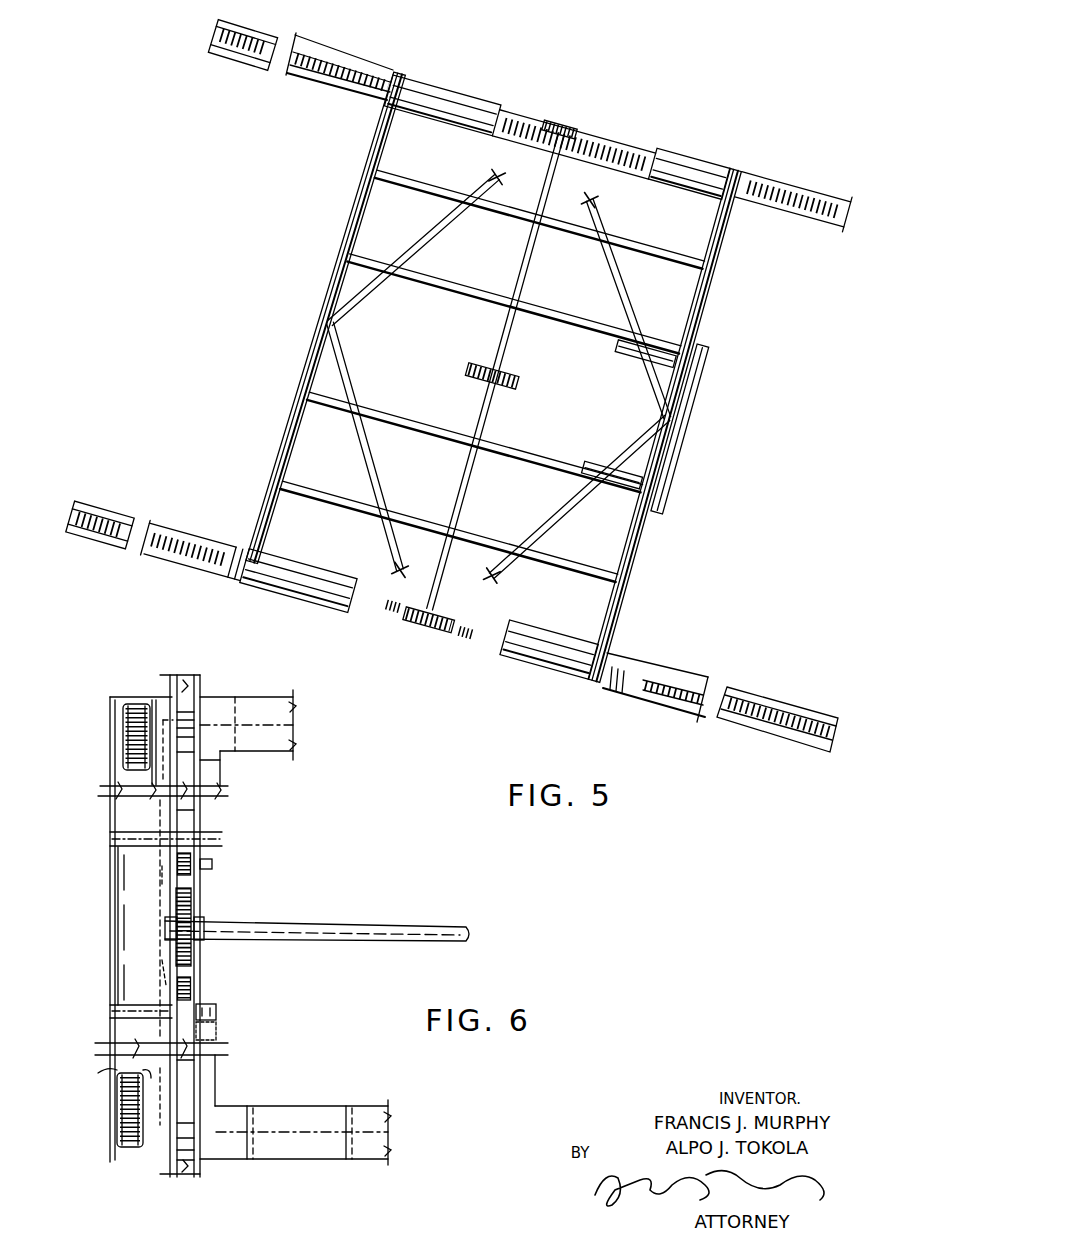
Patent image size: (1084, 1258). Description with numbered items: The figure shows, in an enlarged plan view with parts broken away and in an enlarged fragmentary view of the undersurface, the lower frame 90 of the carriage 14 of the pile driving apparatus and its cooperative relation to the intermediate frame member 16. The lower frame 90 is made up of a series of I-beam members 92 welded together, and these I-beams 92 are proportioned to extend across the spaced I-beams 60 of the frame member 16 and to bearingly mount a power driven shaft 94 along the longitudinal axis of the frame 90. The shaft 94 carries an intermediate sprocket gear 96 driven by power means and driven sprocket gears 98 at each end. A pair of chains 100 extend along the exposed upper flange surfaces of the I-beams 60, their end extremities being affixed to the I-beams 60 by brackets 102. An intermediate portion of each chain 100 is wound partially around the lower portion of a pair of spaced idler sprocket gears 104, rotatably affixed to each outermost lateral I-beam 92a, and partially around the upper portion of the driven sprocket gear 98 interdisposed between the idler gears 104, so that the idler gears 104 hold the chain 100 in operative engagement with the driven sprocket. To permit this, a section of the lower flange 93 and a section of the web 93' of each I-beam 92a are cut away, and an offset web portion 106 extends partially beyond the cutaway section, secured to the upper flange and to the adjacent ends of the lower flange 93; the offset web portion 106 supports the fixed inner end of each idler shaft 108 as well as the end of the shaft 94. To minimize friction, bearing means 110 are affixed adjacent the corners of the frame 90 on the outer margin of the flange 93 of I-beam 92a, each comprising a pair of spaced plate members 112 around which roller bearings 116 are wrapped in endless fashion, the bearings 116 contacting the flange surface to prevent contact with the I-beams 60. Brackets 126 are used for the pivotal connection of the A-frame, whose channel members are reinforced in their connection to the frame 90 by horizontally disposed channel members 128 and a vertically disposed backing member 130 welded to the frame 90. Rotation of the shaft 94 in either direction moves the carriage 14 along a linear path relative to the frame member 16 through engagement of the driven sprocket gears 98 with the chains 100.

In FIG. 5, the carriage 14 is at (288, 440).
In FIG. 5, the intermediate frame member 16 is at (181, 572).
In FIG. 5, the spaced I-beams 60 is at (790, 190).
In FIG. 5, the lower frame 90 is at (650, 538).
In FIG. 5, the I-beam members 92 is at (322, 350).
In FIG. 6, the I-beam members 92 is at (288, 706).
In FIG. 5, the I-beam 92a is at (690, 166).
In FIG. 6, the I-beam 92a is at (216, 768).
In FIG. 6, the lower flange 93 is at (135, 879).
In FIG. 6, the web 93' is at (132, 925).
In FIG. 5, the power driven shaft 94 is at (470, 480).
In FIG. 6, the power driven shaft 94 is at (420, 922).
In FIG. 5, the intermediate sprocket gear 96 is at (515, 366).
In FIG. 5, the driven sprocket gears 98 is at (560, 118).
In FIG. 6, the driven sprocket gears 98 is at (190, 920).
In FIG. 5, the chains 100 is at (770, 225).
In FIG. 6, the chains 100 is at (204, 690).
In FIG. 5, the brackets 102 is at (214, 34).
In FIG. 6, the idler sprocket gears 104 is at (163, 874).
In FIG. 6, the offset web portion 106 is at (210, 1010).
In FIG. 6, the idler shaft 108 is at (212, 862).
In FIG. 6, the bearing means 110 is at (110, 695).
In FIG. 6, the plate members 112 is at (150, 740).
In FIG. 6, the roller bearings 116 is at (134, 704).
In FIG. 5, the brackets 126 is at (640, 382).
In FIG. 5, the horizontally disposed channel members 128 is at (620, 352).
In FIG. 5, the vertically disposed backing member 130 is at (705, 392).